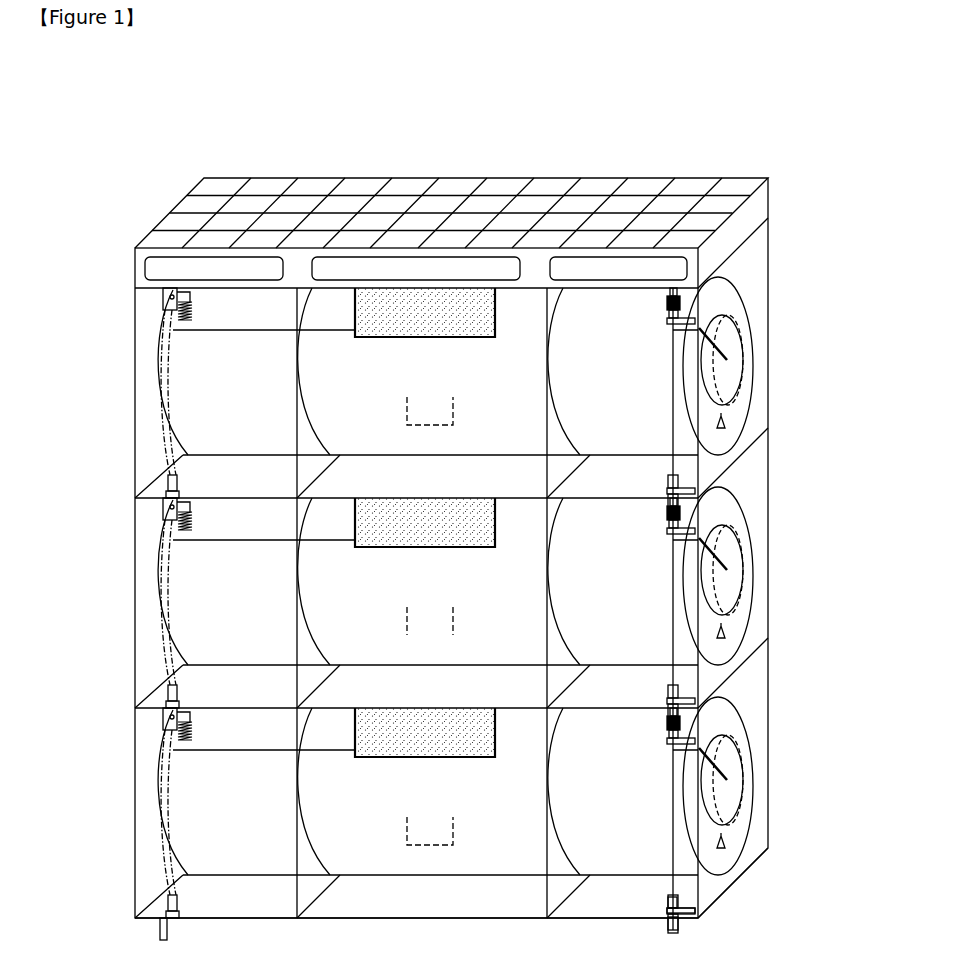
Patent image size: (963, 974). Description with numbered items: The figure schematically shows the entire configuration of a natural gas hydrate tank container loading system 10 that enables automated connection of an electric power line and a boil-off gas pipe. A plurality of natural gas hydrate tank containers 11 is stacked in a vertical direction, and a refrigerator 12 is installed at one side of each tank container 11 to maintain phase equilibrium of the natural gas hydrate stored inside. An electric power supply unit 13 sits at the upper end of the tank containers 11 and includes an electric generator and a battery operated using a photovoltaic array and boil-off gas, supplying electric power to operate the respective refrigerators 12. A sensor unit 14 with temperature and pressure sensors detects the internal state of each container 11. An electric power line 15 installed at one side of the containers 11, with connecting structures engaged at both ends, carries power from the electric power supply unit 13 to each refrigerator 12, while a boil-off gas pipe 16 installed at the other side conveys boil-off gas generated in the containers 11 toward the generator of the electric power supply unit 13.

The natural gas hydrate tank container loading system 10 is at (140, 126).
The natural gas hydrate tank container 11 is at (765, 393).
The refrigerator 12 is at (418, 306).
The electric power supply unit 13 is at (753, 225).
The sensor unit 14 is at (413, 397).
The electric power line 15 is at (167, 870).
The boil-off gas pipe 16 is at (673, 820).